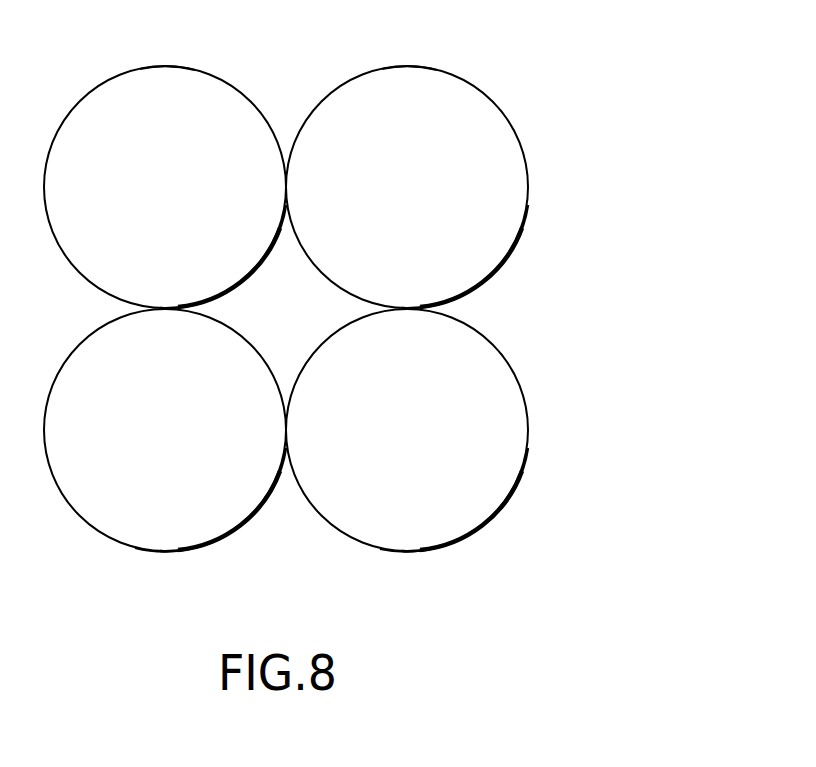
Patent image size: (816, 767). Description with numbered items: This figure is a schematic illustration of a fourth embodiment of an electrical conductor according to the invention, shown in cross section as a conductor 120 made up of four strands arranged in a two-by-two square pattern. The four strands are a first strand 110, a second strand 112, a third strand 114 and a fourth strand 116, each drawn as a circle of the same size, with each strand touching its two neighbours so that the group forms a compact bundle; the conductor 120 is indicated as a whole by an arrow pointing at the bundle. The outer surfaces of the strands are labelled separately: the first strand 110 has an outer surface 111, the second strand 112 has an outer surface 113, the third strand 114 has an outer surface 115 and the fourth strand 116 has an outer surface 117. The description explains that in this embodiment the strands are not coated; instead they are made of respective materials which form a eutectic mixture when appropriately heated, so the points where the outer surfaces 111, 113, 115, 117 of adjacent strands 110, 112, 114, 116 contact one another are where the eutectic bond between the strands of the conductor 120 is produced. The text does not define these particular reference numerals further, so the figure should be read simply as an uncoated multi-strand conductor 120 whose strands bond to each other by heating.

The first optical fiber 110 is at (190, 203).
The outer surface of first optical fiber 111 is at (168, 67).
The second optical fiber 112 is at (432, 203).
The outer surface of second optical fiber 113 is at (413, 68).
The third optical fiber 114 is at (190, 445).
The outer surface of third optical fiber 115 is at (157, 552).
The fourth optical fiber 116 is at (432, 446).
The outer surface of fourth optical fiber 117 is at (427, 552).
The fiber bundle assembly 120 is at (586, 333).